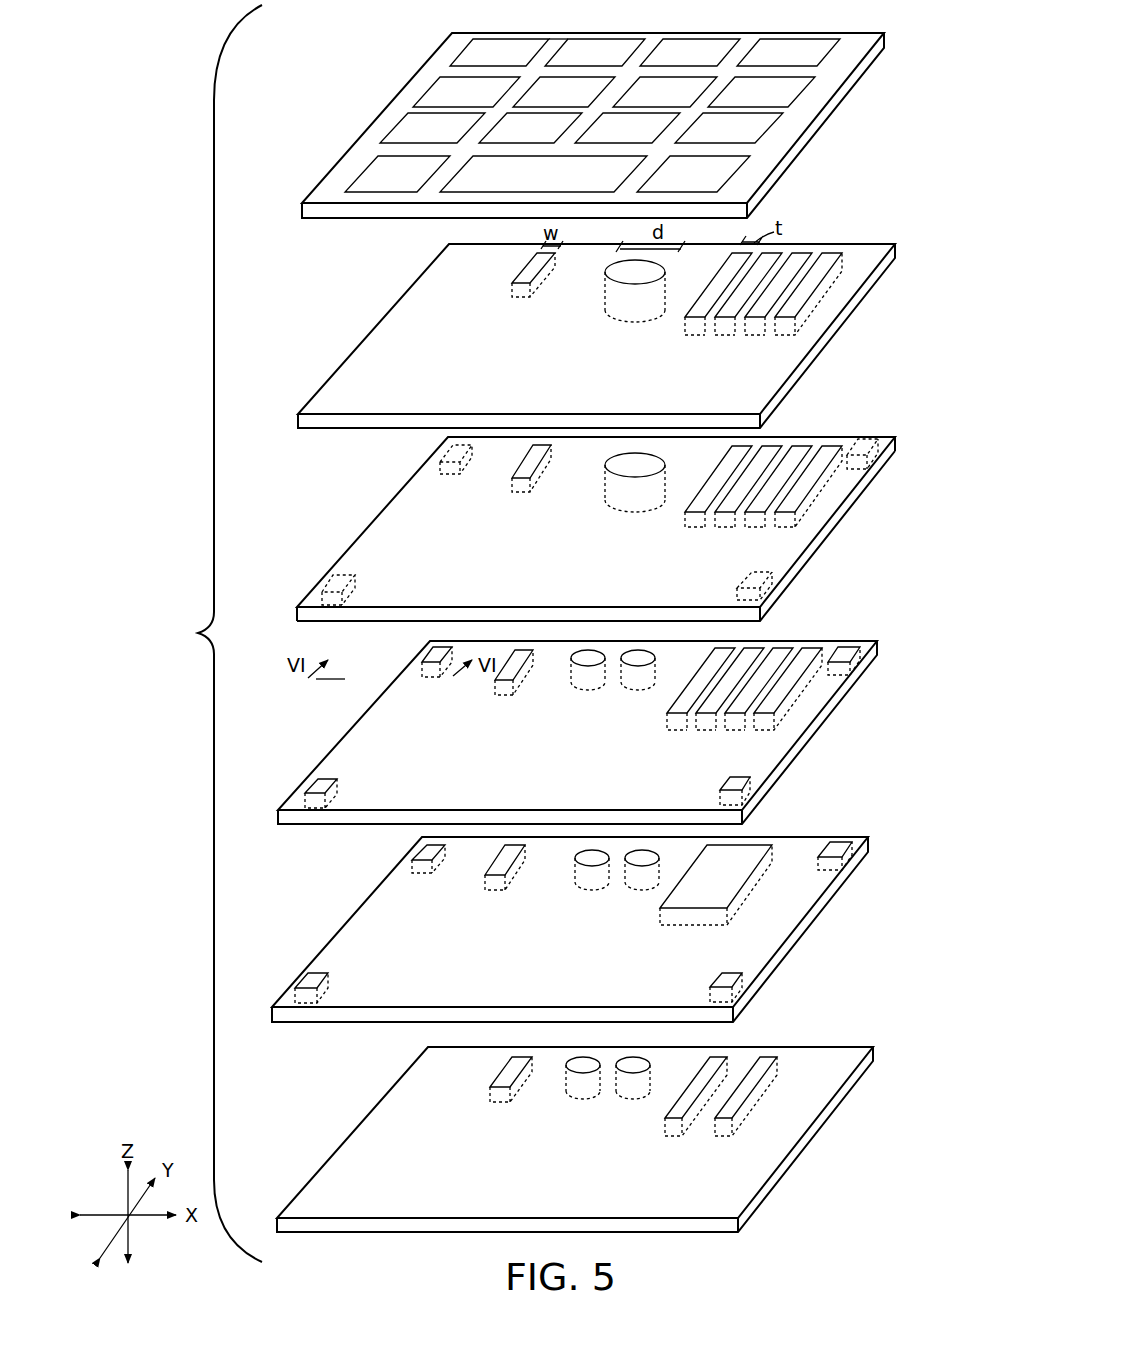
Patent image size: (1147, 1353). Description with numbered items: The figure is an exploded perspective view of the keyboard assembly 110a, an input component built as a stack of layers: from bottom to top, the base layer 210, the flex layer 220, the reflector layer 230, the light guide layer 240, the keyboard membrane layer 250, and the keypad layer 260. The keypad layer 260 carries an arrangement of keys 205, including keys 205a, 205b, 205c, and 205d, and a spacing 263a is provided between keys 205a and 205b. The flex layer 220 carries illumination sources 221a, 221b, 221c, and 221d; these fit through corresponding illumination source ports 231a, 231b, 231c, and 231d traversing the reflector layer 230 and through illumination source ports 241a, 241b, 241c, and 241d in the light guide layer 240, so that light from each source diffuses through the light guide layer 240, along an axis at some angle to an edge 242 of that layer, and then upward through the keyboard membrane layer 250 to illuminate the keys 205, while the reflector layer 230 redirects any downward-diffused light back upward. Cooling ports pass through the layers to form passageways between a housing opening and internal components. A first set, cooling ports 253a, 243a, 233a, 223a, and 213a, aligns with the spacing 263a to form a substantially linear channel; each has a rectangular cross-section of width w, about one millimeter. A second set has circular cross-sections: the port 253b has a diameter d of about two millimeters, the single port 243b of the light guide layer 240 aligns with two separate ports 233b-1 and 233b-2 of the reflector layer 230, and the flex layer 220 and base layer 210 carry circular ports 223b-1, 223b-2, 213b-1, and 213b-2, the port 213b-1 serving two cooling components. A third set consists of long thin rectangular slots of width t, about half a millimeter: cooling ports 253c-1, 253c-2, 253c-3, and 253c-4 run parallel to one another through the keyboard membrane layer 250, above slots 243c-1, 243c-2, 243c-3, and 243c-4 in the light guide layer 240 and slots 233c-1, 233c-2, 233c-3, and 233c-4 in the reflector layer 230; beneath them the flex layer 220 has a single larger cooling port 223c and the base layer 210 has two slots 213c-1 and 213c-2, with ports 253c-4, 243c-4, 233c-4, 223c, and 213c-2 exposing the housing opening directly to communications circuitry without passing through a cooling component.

The keyboard assembly 110a is at (201, 633).
The keys 205 is at (445, 89).
The key 205a is at (525, 63).
The key 205b is at (618, 63).
The antenna patch 205c is at (718, 63).
The antenna patch 205d is at (821, 63).
The keypad layer 260 is at (858, 126).
The spacing 263a is at (557, 38).
The keyboard membrane layer 250 is at (858, 343).
The cooling port 253a is at (520, 299).
The cooling port 253b is at (617, 320).
The cooling port 253c-1 is at (687, 334).
The cooling port 253c-2 is at (717, 335).
The cooling port 253c-3 is at (747, 335).
The cooling port 253c-4 is at (780, 335).
The light guide layer 240 is at (853, 537).
The edge 242 is at (742, 615).
The illumination source port 241a is at (440, 457).
The illumination source port 241b is at (325, 588).
The illumination source port 241c is at (790, 577).
The illumination source port 241d is at (897, 445).
The cooling port 243a is at (528, 492).
The cooling port 243b is at (615, 487).
The conductive strip via 243c-1 is at (685, 518).
The conductive strip via 243c-2 is at (722, 528).
The conductive strip via 243c-3 is at (757, 528).
The cooling port 243c-4 is at (787, 528).
The reflector layer 230 is at (823, 737).
The illumination source port 231a is at (427, 653).
The illumination source port 231b is at (308, 785).
The illumination source port 231c is at (745, 778).
The illumination source port 231d is at (873, 655).
The cooling port 233a is at (505, 690).
The cooling port 233b-1 is at (577, 683).
The cooling port 233b-2 is at (642, 685).
The conductive strip via 233c-1 is at (670, 731).
The conductive strip via 233c-2 is at (697, 731).
The conductive strip via 233c-3 is at (728, 732).
The cooling port 233c-4 is at (760, 732).
The flex layer 220 is at (825, 946).
The illumination source 221a is at (417, 848).
The illumination source 221b is at (298, 980).
The illumination source 221c is at (742, 977).
The illumination source 221d is at (852, 845).
The cooling port 223a is at (488, 892).
The cooling port 223b-1 is at (580, 885).
The cylindrical conductive via 223b-2 is at (640, 885).
The cooling port 223c is at (668, 927).
The base layer 210 is at (811, 1176).
The cooling port 213a is at (498, 1102).
The cooling port 213b-1 is at (577, 1093).
The cylindrical conductive via 213b-2 is at (635, 1093).
The conductive strip via 213c-1 is at (677, 1138).
The cooling port 213c-2 is at (727, 1140).